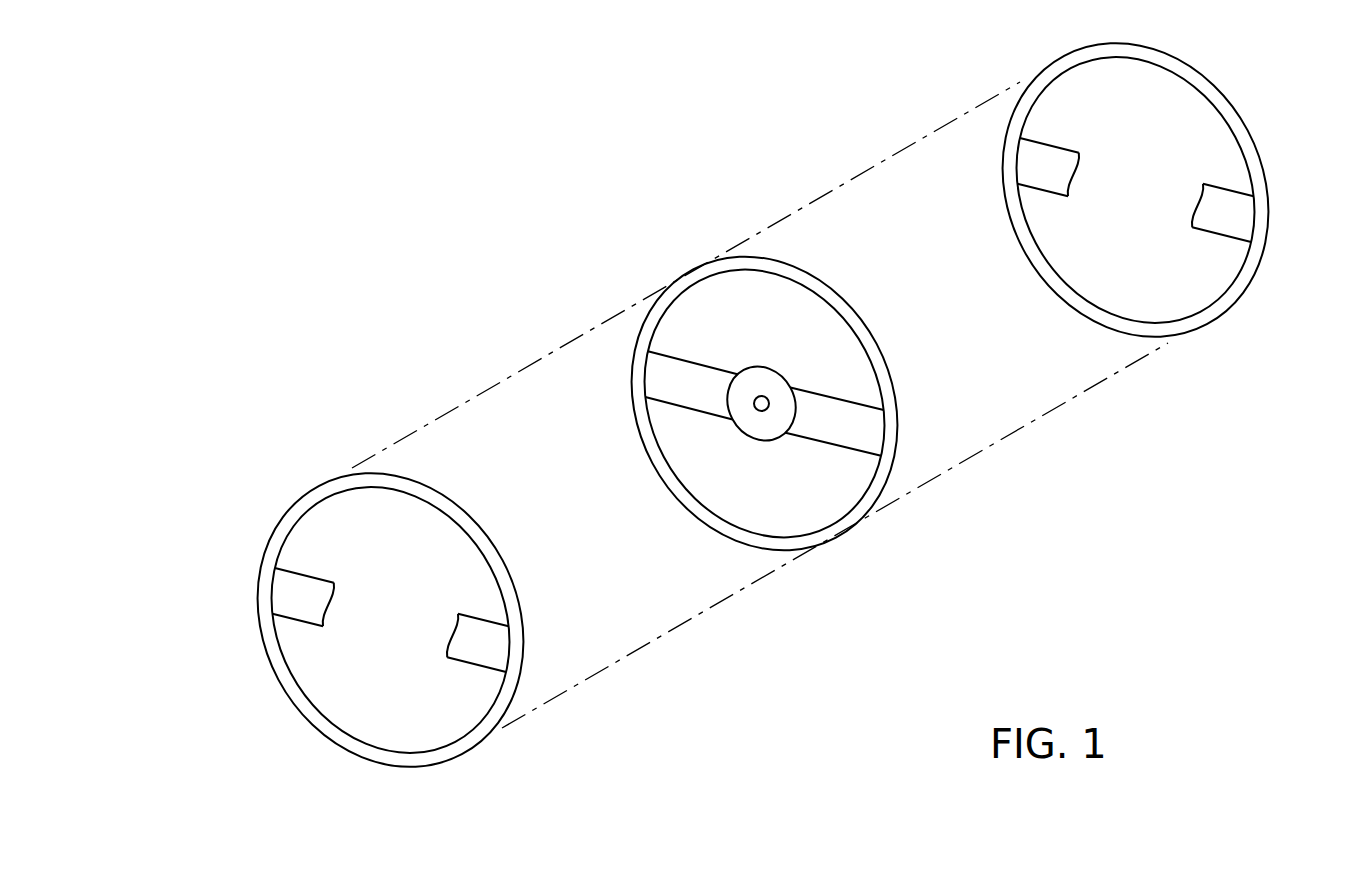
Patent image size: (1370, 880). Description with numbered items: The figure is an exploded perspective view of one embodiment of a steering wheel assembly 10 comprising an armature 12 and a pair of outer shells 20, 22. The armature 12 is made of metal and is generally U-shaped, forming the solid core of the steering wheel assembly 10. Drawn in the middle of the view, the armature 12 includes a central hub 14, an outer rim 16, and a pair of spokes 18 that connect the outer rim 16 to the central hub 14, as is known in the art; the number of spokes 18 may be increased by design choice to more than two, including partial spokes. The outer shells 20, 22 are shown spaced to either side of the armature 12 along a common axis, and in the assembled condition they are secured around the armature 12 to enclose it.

The steering wheel assembly 10 is at (555, 212).
The armature 12 is at (752, 407).
The central hub 14 is at (746, 366).
The outer rim 16 is at (869, 331).
The spokes 18 is at (682, 408).
The outer shell 20 is at (313, 722).
The outer shell 22 is at (1228, 98).